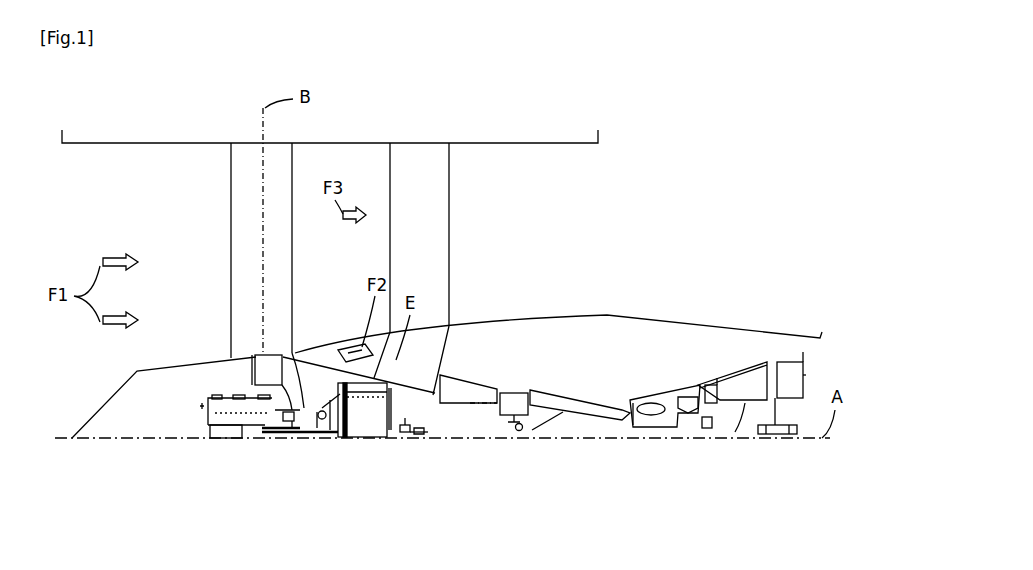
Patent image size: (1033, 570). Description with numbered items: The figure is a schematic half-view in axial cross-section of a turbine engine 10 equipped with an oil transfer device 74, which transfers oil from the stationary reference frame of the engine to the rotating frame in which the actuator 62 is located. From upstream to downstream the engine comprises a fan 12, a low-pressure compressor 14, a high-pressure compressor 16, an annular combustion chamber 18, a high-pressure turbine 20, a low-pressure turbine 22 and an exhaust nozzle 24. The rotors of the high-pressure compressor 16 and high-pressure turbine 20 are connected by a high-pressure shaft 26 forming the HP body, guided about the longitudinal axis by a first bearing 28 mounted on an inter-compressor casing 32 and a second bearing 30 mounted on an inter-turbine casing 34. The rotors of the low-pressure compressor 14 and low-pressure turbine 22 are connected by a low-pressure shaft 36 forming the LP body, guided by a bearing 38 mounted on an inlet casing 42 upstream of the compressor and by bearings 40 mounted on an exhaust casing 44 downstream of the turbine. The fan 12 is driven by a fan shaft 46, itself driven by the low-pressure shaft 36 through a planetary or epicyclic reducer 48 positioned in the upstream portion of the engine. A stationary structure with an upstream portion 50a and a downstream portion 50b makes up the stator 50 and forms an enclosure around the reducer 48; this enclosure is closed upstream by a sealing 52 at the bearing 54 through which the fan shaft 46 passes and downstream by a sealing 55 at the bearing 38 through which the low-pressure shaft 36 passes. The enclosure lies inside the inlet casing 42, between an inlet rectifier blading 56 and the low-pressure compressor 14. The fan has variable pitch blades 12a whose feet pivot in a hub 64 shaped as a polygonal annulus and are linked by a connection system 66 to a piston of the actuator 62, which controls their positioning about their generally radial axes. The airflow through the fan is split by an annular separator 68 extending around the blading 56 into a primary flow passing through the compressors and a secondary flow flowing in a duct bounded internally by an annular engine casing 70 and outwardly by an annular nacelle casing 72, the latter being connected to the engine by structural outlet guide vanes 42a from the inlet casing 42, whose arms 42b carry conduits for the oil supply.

The turbine engine 10 is at (710, 200).
The fan 12 is at (251, 233).
The variable pitch blades 12a is at (230, 240).
The low-pressure compressor 14 is at (470, 405).
The high-pressure compressor 16 is at (557, 428).
The annular combustion chamber 18 is at (652, 430).
The high-pressure turbine 20 is at (688, 430).
The low-pressure turbine 22 is at (752, 375).
The exhaust nozzle 24 is at (805, 350).
The high-pressure shaft 26 is at (632, 400).
The first bearing 28 is at (519, 432).
The second bearing 30 is at (710, 432).
The inter-compressor casing 32 is at (524, 392).
The inter-turbine casing 34 is at (716, 380).
The low-pressure shaft 36 is at (592, 440).
The bearing 38 is at (408, 440).
The bearings 40 is at (776, 438).
The inlet casing 42 is at (450, 320).
The outlet guide vanes 42a is at (456, 212).
The arms 42b is at (454, 348).
The exhaust casing 44 is at (806, 378).
The fan shaft 46 is at (262, 356).
The reducer 48 is at (366, 452).
The engine casing or stator 50 is at (390, 372).
The upstream portion 50a is at (300, 352).
The downstream portion 50b is at (430, 440).
The sealing 52 is at (268, 440).
The bearing 54 is at (288, 440).
The sealing 55 is at (420, 440).
The inlet rectifier blading 56 is at (340, 345).
The actuator 62 is at (226, 440).
The hub 64 is at (250, 377).
The connection system 66 is at (230, 397).
The annular separator 68 is at (318, 342).
The annular engine casing 70 is at (586, 316).
The annular nacelle casing 72 is at (537, 143).
The oil transfer device 74 is at (316, 447).